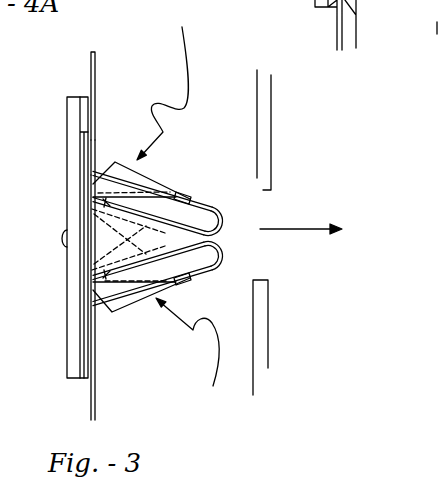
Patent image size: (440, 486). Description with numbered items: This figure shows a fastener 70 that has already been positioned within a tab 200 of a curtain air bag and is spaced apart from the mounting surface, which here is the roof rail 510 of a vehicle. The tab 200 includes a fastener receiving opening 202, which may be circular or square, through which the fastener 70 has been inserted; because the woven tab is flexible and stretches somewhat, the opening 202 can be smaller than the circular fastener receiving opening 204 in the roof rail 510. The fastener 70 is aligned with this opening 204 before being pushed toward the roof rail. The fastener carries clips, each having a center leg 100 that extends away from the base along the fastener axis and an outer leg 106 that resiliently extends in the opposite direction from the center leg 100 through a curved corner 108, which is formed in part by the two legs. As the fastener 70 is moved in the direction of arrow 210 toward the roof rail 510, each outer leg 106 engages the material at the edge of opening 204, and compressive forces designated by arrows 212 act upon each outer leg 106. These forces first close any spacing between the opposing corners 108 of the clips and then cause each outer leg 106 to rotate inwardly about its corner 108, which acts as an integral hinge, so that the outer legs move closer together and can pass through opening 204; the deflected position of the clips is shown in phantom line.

The fastener 70 is at (75, 158).
The center leg 100 is at (144, 232).
The outer leg 106 is at (201, 199).
The curved corner 108 is at (222, 212).
The tab 200 is at (90, 236).
The fastener receiving opening 202 is at (96, 157).
The fastener receiving opening 204 is at (261, 283).
The arrow 210 is at (298, 229).
The arrows 212 is at (184, 206).
The roof rail 510 is at (262, 113).